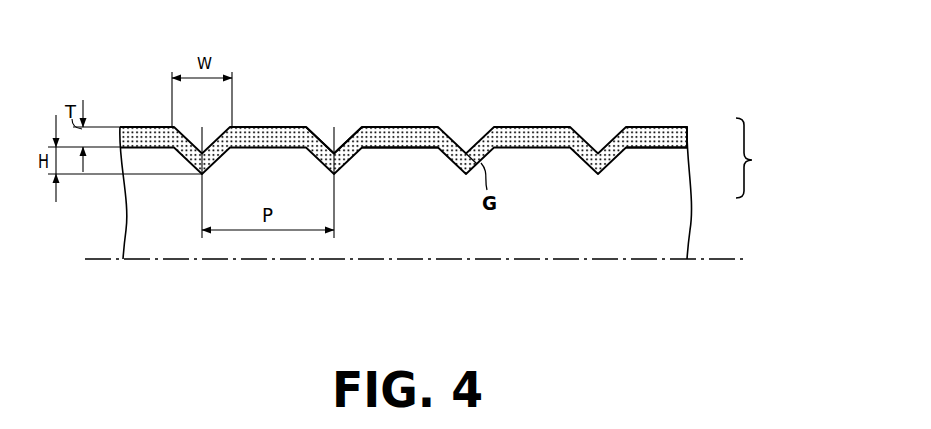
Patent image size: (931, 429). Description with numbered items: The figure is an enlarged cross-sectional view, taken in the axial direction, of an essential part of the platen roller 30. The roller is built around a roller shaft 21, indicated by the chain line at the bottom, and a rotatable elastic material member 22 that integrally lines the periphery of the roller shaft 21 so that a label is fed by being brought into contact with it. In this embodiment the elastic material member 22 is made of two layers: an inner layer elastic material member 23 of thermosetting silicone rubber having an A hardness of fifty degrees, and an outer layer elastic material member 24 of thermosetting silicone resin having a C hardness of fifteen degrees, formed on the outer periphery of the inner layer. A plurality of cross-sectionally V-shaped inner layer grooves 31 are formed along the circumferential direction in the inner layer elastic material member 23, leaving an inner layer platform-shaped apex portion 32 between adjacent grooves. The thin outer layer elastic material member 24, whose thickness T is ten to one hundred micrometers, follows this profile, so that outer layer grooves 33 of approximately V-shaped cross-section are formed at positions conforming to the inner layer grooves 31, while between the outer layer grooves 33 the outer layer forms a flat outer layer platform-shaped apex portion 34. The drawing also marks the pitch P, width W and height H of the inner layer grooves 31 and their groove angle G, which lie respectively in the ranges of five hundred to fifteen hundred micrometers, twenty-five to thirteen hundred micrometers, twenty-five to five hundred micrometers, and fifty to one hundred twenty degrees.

The platen roller 30 is at (582, 92).
The inner layer grooves 31 is at (322, 150).
The inner layer platform-shaped apex portion 32 is at (410, 140).
The outer layer grooves 33 is at (345, 136).
The outer layer platform-shaped apex portion 34 is at (395, 124).
The outer layer elastic material member 24 is at (675, 137).
The inner layer elastic material member 23 is at (668, 183).
The elastic material member 22 is at (755, 158).
The roller shaft 21 is at (718, 262).